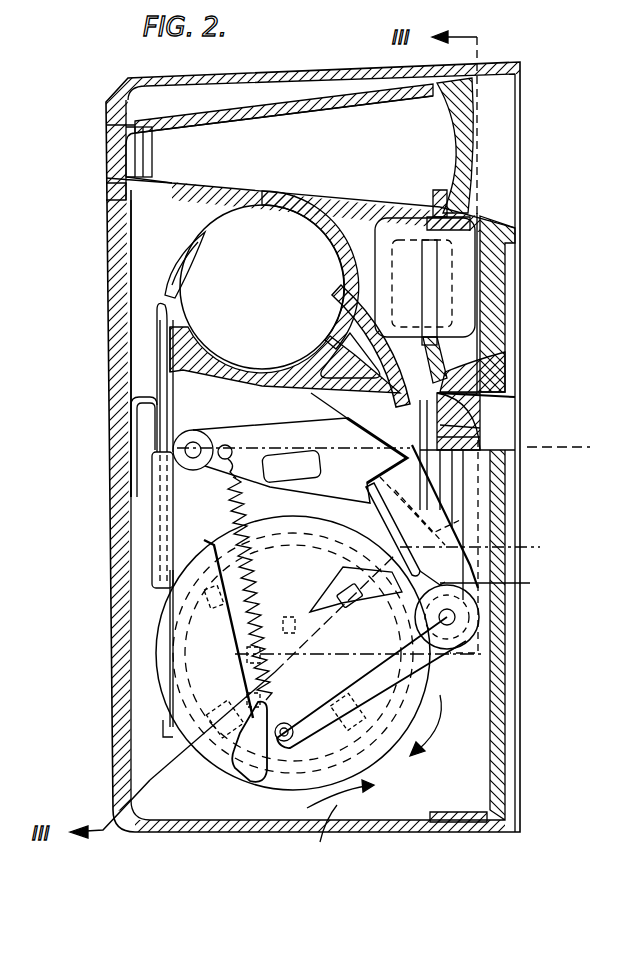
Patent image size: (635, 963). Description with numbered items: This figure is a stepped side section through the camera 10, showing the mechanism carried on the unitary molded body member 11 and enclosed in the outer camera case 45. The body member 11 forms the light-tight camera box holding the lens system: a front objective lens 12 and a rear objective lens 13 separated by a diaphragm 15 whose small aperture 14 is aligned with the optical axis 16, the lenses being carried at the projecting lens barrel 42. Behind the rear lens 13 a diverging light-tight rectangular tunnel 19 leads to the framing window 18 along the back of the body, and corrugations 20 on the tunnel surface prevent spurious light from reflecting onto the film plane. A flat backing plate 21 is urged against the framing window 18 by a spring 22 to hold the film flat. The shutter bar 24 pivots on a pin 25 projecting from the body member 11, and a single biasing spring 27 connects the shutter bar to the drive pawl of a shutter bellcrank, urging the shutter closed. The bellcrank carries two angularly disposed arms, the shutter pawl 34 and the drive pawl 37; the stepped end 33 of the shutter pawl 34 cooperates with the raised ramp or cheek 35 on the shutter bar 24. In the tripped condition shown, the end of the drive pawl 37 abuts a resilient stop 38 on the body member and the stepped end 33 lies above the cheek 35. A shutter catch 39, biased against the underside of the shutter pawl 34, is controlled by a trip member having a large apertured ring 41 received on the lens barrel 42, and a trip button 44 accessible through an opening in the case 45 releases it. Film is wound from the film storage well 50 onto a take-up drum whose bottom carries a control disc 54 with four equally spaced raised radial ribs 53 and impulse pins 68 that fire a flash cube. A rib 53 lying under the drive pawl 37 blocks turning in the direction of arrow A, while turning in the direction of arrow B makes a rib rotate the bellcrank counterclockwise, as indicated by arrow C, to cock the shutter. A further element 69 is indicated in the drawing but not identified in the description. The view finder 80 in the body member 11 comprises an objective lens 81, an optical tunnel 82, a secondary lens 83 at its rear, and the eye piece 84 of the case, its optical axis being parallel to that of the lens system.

The camera 10 is at (548, 184).
The body member 11 is at (152, 283).
The front objective lens 12 is at (468, 411).
The rear objective lens 13 is at (363, 397).
The small aperture 14 is at (480, 437).
The diaphragm 15 is at (480, 427).
The optical axis 16 is at (572, 447).
The framing window 18 is at (180, 383).
The light-tight rectangular tunnel 19 is at (236, 393).
The corrugations 20 is at (253, 387).
The flat backing plate 21 is at (158, 312).
The spring 22 is at (158, 397).
The shutter bar 24 is at (243, 449).
The pin 25 is at (194, 462).
The biasing spring 27 is at (261, 592).
The stepped end 33 is at (311, 393).
The shutter pawl 34 is at (450, 490).
The cheek 35 is at (292, 466).
The drive pawl 37 is at (377, 666).
The resilient stop 38 is at (237, 777).
The shutter catch 39 is at (484, 546).
The apertured ring 41 is at (500, 358).
The lens barrel 42 is at (510, 396).
The trip button 44 is at (465, 275).
The outer camera case 45 is at (118, 650).
The film storage well 50 is at (197, 243).
The raised radial ribs 53 is at (390, 763).
The control disc 54 is at (160, 683).
The impulse pin 68 is at (307, 626).
The pawl tooth 69 is at (356, 592).
The view finder 80 is at (240, 117).
The objective lens 81 is at (465, 133).
The optical tunnel 82 is at (307, 110).
The secondary lens 83 is at (158, 155).
The eye piece 84 is at (118, 184).
The arrow A is at (437, 714).
The arrow B is at (337, 823).
The arrow C is at (493, 583).